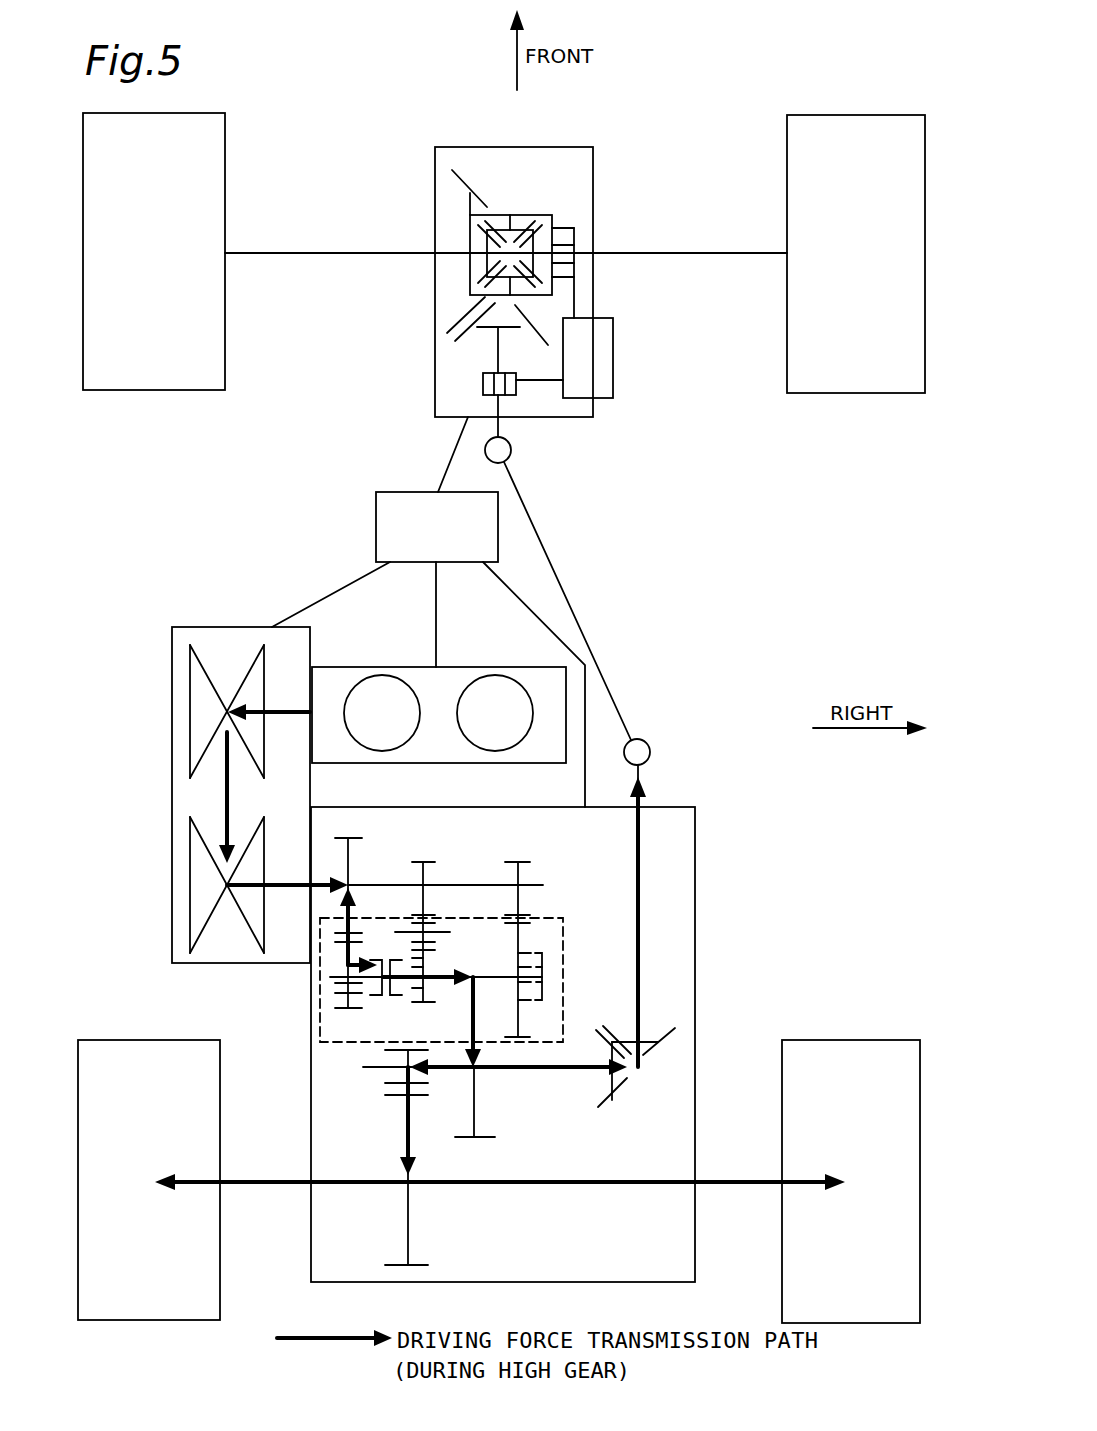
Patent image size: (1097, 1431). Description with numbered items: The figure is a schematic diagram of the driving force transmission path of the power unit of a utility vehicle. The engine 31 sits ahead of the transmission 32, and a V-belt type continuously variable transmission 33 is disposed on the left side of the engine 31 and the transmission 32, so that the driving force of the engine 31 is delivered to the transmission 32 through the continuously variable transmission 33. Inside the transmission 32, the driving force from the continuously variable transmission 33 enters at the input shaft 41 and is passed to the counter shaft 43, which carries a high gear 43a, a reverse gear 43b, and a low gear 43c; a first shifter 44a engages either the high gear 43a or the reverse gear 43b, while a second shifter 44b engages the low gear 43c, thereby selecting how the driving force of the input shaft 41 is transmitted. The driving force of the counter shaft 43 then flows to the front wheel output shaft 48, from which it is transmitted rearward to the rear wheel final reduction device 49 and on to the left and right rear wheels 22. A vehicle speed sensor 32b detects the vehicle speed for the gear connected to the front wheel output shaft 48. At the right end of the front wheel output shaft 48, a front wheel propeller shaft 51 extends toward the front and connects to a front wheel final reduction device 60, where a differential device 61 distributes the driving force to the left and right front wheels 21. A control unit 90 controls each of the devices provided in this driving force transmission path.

The front wheels 21 is at (182, 130).
The rear wheels 22 is at (147, 1305).
The engine 31 is at (460, 678).
The transmission 32 is at (670, 818).
The vehicle speed sensor 32b is at (502, 1142).
The continuously variable transmission 33 is at (228, 638).
The input shaft 41 is at (543, 885).
The counter shaft 43 is at (504, 937).
The high gear 43a is at (337, 992).
The reverse gear 43b is at (425, 990).
The low gear 43c is at (537, 952).
The first shifter 44a is at (378, 990).
The second shifter 44b is at (543, 958).
The front wheel output shaft 48 is at (528, 1067).
The rear wheel final reduction device 49 is at (405, 1092).
The front wheel propeller shaft 51 is at (642, 872).
The front wheel final reduction device 60 is at (532, 297).
The differential device 61 is at (528, 215).
The control unit 90 is at (376, 527).